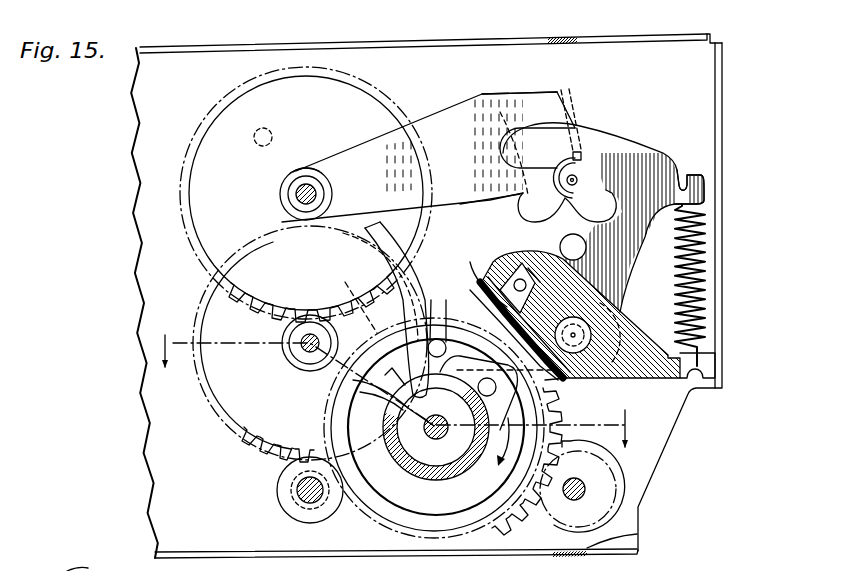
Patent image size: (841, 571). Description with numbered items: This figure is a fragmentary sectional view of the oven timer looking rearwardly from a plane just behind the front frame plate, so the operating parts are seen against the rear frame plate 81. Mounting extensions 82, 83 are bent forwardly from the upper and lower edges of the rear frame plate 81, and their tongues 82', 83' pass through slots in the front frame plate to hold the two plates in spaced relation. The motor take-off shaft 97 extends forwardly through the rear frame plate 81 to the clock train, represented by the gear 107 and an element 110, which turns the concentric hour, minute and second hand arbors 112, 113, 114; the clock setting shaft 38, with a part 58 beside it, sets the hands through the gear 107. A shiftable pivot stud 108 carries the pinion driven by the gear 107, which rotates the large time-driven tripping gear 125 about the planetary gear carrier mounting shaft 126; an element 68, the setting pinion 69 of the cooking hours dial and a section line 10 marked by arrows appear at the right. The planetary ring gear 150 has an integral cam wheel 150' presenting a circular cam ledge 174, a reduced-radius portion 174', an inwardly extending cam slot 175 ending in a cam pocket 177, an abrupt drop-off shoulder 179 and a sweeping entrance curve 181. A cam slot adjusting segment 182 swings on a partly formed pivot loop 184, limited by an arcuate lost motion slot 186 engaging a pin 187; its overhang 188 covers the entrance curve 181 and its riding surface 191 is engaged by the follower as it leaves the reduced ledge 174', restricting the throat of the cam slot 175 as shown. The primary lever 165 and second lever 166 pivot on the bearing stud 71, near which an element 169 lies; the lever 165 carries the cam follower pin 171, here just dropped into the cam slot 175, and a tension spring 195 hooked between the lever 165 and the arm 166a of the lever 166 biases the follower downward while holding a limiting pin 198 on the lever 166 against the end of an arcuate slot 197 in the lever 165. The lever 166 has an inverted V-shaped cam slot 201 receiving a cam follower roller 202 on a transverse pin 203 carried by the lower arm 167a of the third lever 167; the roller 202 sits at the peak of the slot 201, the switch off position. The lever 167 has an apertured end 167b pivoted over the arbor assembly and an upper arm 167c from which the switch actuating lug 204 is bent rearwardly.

The section line 10- 10 is at (401, 391).
The clock setting shaft 38 is at (295, 489).
The bearing 58 is at (293, 503).
The shaft 68 is at (586, 489).
The setting pinion 69 is at (597, 507).
The bearing stud 71 is at (580, 314).
The rear frame plate 81 is at (226, 66).
The mounting extension 82 is at (677, 296).
The tongue 82' is at (560, 54).
The mounting extension 83 is at (396, 560).
The tongue 83' is at (616, 540).
The power take-off shaft 97 is at (254, 133).
The clock train gear 107 is at (287, 344).
The pivot stud 108 is at (284, 343).
The gear 110 is at (289, 194).
The hour hand arbor 112 is at (294, 187).
The minute hand arbor 113 is at (269, 186).
The second hand arbor 114 is at (273, 199).
The time-driven tripping gear 125 is at (378, 527).
The planetary gear carrier mounting shaft 126 is at (438, 440).
The planetary ring gear 150 is at (399, 428).
The cam wheel 150' is at (400, 428).
The first cam responsive lever 165 is at (478, 270).
The second lever 166 is at (641, 211).
The arm 166a is at (675, 166).
The third lever 167 is at (428, 144).
The lower arm 167a is at (523, 178).
The apertured end 167b is at (313, 177).
The upper arm 167c is at (520, 105).
The pivot pin 169 is at (594, 330).
The cam follower pin 171 is at (335, 293).
The circular cam ledge 174 is at (311, 298).
The reduced radius ledge surface 174' is at (548, 282).
The cam slot 175 is at (391, 310).
The cam pocket 177 is at (385, 397).
The drop-off shoulder 179 is at (393, 300).
The sweeping curve 181 is at (370, 252).
The cam slot adjusting segment 182 is at (476, 437).
The pivot loop 184 is at (418, 464).
The arcuate lost motion slot 186 is at (517, 396).
The pin 187 is at (553, 381).
The overhang 188 is at (490, 312).
The riding surface 191 is at (547, 313).
The tension spring 195 is at (700, 278).
The arcuate slot 197 is at (508, 290).
The limiting pin 198 is at (523, 265).
The cam slot 201 is at (490, 211).
The cam follower roller 202 is at (583, 172).
The transverse pin 203 is at (596, 176).
The switch actuating lug 204 is at (576, 128).